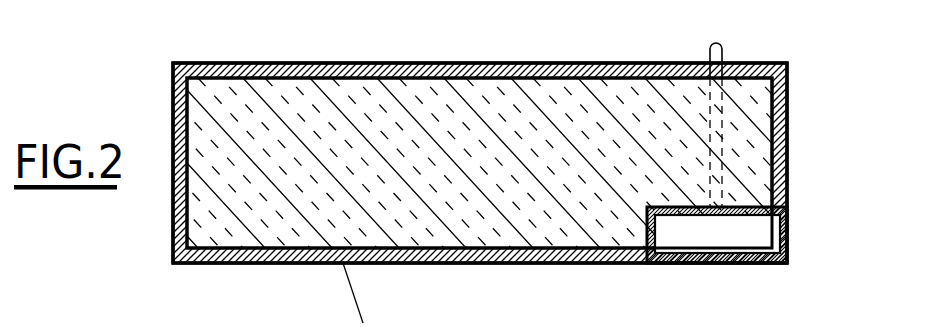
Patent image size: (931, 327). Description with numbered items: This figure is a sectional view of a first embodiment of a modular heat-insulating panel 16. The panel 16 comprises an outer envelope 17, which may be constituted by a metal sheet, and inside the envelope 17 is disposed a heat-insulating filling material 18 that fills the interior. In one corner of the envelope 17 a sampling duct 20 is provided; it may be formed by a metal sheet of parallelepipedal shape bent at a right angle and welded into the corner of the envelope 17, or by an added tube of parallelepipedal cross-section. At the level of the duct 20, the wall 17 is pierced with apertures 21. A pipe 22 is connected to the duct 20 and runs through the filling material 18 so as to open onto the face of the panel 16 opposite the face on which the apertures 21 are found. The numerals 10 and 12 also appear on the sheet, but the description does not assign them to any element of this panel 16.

The heating apparatus 10 is at (480, 131).
The housing 12 is at (479, 124).
The panel 16 is at (665, 58).
The outer envelope 17 is at (251, 80).
The heat-insulating filling material 18 is at (270, 220).
The sampling duct 20 is at (787, 250).
The apertures 21 is at (715, 263).
The pipe 22 is at (713, 173).